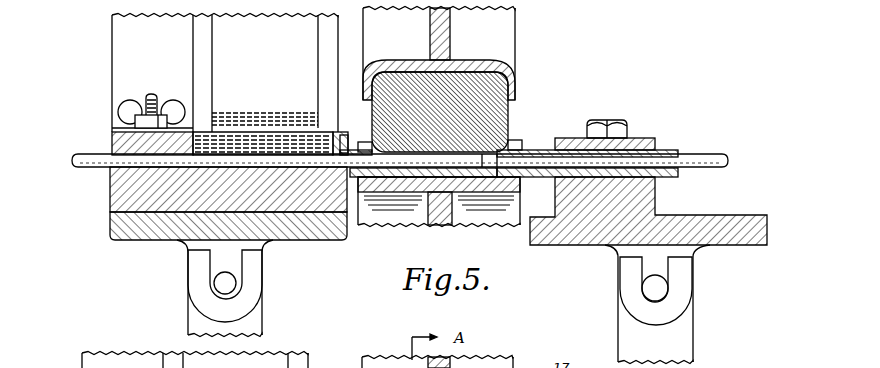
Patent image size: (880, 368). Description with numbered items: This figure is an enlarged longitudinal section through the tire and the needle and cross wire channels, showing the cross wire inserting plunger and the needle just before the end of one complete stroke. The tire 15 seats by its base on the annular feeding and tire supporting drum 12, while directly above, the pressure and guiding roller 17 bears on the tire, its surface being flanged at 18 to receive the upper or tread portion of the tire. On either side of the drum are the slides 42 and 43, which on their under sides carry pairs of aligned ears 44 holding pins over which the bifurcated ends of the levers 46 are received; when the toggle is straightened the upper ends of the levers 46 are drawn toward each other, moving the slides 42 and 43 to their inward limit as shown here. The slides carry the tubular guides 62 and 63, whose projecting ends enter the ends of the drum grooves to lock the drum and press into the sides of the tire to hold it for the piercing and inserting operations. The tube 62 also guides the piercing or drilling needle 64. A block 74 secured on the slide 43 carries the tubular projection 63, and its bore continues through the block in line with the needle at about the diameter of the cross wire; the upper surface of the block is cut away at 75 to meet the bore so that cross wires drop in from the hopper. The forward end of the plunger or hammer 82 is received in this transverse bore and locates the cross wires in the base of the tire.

The feeding and tire supporting drum 12 is at (443, 226).
The tire 15 is at (510, 115).
The pressure and guiding roller 17 is at (517, 42).
The flange 18 is at (510, 80).
The slide 42 is at (583, 245).
The slide 43 is at (308, 237).
The ears 44 is at (265, 252).
The levers 46 is at (260, 308).
The tubular guide 62 is at (525, 150).
The tubular guide 63 is at (353, 143).
The piercing or drilling needle 64 is at (710, 158).
The block 74 is at (122, 195).
The cut away opening 75 is at (193, 147).
The plunger or hammer 82 is at (72, 163).